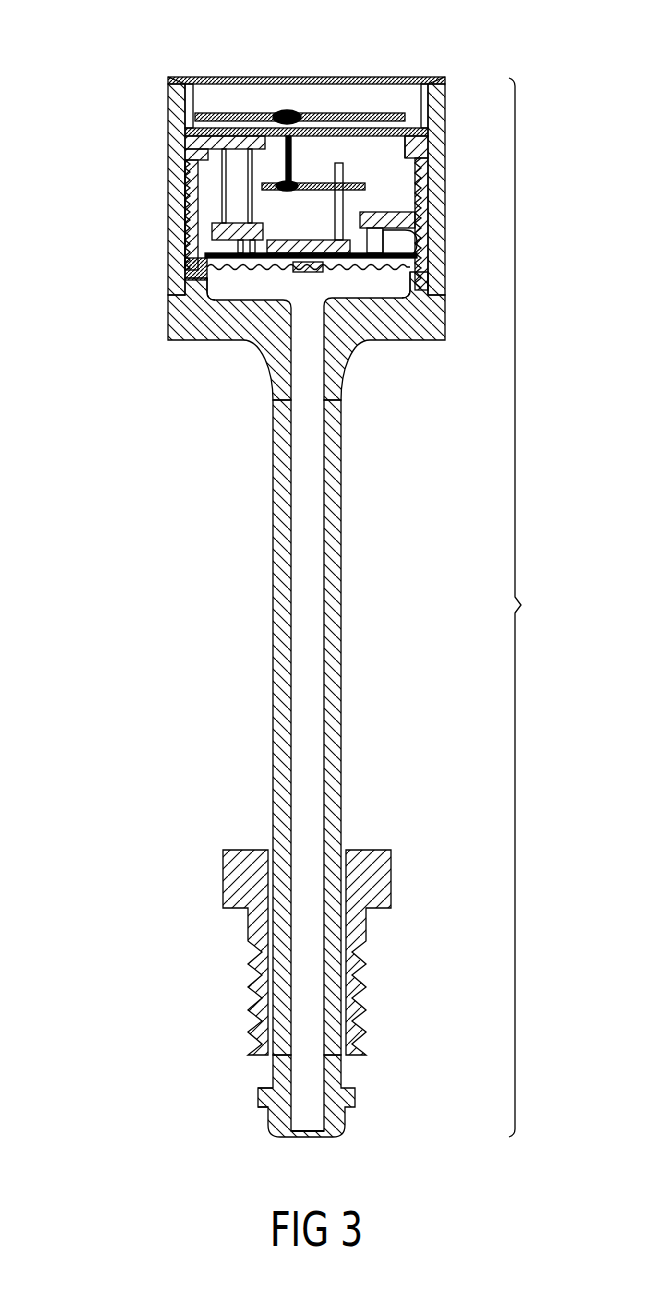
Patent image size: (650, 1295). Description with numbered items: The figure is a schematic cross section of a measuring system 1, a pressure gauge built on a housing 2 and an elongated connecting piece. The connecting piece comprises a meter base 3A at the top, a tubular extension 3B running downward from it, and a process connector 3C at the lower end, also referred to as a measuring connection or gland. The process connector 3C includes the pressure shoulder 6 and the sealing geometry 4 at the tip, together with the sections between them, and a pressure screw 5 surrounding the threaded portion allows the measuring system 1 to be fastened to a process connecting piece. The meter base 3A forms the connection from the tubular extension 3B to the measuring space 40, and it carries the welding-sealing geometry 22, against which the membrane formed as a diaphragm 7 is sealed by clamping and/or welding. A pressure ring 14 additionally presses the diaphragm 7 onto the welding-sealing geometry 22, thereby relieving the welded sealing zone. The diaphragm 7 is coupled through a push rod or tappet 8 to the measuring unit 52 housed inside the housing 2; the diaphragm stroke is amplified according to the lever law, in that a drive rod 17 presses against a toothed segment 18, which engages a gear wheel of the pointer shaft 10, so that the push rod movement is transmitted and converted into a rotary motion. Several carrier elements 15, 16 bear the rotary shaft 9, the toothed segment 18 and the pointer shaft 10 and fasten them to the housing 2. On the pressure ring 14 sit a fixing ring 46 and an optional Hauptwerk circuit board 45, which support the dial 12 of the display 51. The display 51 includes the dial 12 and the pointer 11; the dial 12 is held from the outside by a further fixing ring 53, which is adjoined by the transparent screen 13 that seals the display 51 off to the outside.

The measuring system 1 is at (527, 607).
The housing 2 is at (168, 128).
The meter base 3A is at (440, 317).
The tubular extension 3B is at (333, 540).
The process connector 3C is at (317, 1068).
The sealing geometry 4 is at (333, 1132).
The pressure screw 5 is at (385, 868).
The pressure shoulder 6 is at (262, 1095).
The diaphragm 7 is at (207, 280).
The tappet 8 is at (300, 273).
The rotary shaft 9 is at (330, 272).
The pointer shaft 10 is at (287, 112).
The pointer 11 is at (240, 112).
The dial 12 is at (345, 130).
The transparent screen 13 is at (380, 78).
The pressure ring 14 is at (188, 170).
The carrier element 15 is at (205, 222).
The carrier element 16 is at (420, 246).
The drive rod 17 is at (344, 170).
The toothed segment 18 is at (336, 168).
The welding-sealing geometry 22 is at (195, 268).
The measuring space 40 is at (400, 312).
The Hauptwerk circuit board 45 is at (393, 143).
The fixing ring 46 is at (185, 142).
The display 51 is at (210, 95).
The measuring unit 52 is at (190, 228).
The further fixing ring 53 is at (180, 84).